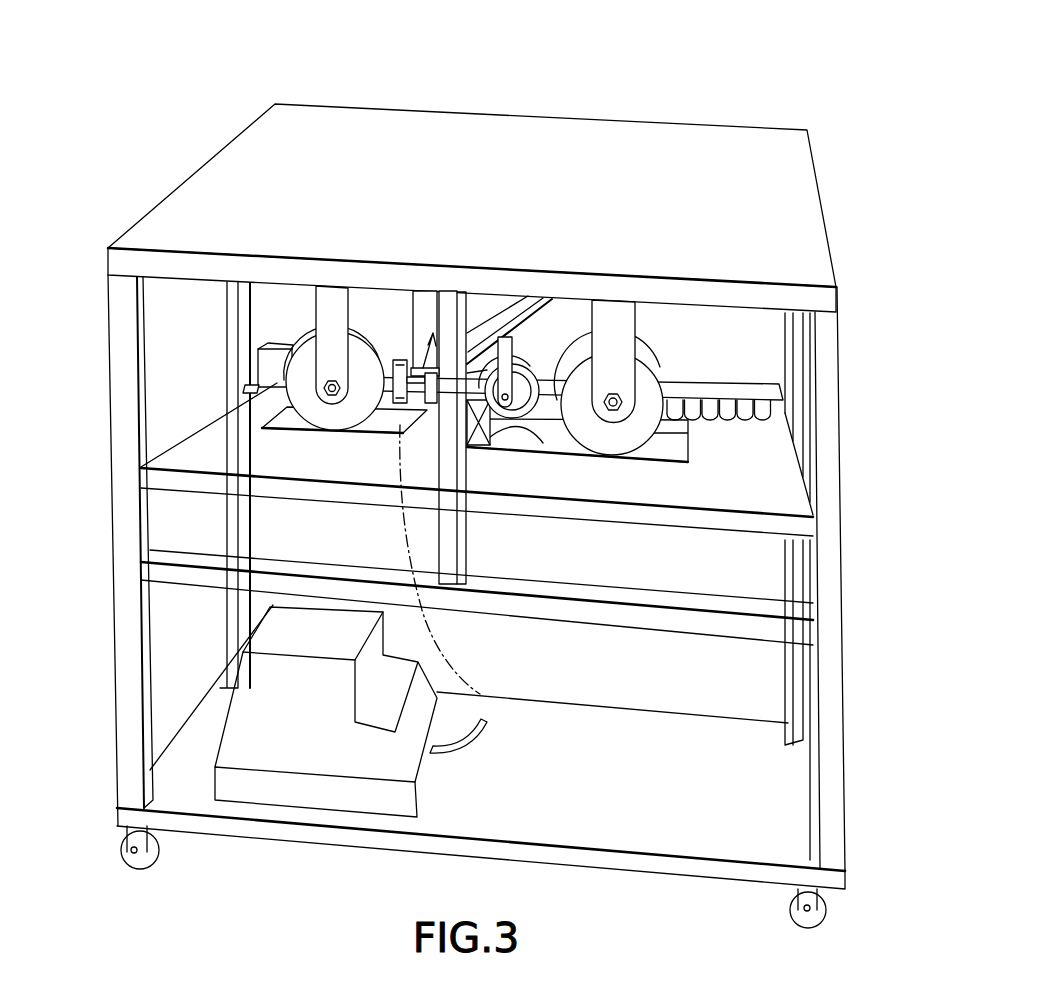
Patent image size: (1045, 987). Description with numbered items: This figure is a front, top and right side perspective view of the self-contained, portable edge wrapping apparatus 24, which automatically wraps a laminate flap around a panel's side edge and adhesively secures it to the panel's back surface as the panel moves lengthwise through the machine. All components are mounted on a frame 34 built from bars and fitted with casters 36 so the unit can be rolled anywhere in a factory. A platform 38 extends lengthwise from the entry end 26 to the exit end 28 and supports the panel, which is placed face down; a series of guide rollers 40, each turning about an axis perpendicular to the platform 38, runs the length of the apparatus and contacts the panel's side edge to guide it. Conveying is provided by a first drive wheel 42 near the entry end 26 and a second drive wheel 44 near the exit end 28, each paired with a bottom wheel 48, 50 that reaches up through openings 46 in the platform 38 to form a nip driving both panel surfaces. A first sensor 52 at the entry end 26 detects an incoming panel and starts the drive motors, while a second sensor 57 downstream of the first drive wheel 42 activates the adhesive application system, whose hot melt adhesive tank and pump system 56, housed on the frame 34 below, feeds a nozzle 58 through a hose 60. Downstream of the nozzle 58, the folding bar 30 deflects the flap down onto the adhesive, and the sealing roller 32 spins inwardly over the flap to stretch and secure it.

The edge wrapping apparatus 24 is at (535, 90).
The entry end 26 is at (100, 266).
The exit end 28 is at (847, 301).
The folding bar 30 is at (487, 443).
The sealing roller 32 is at (530, 365).
The frame 34 is at (832, 523).
The casters 36 is at (790, 902).
The platform 38 is at (175, 455).
The guide rollers 40 is at (726, 408).
The first drive wheel 42 is at (300, 383).
The second drive wheel 44 is at (653, 432).
The openings 46 is at (284, 432).
The bottom wheel 48 is at (368, 432).
The bottom wheel 50 is at (641, 455).
The first sensor 52 is at (253, 384).
The hot melt adhesive tank and pump system 56 is at (298, 800).
The second sensor 57 is at (396, 408).
The nozzle 58 is at (432, 305).
The hose 60 is at (483, 722).